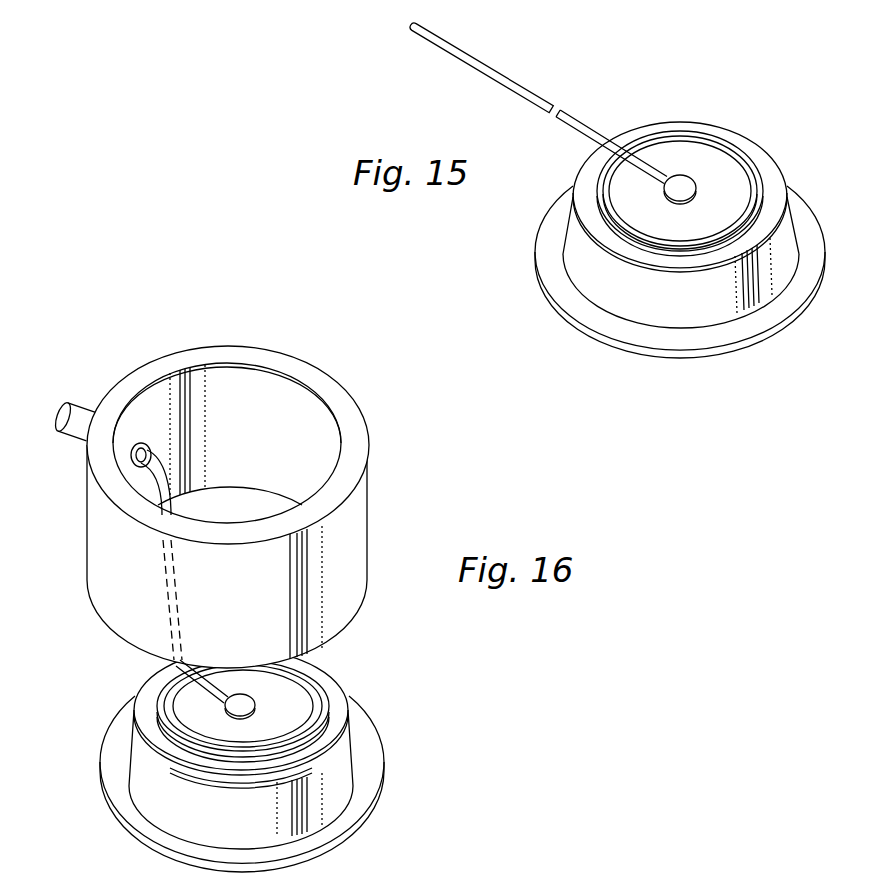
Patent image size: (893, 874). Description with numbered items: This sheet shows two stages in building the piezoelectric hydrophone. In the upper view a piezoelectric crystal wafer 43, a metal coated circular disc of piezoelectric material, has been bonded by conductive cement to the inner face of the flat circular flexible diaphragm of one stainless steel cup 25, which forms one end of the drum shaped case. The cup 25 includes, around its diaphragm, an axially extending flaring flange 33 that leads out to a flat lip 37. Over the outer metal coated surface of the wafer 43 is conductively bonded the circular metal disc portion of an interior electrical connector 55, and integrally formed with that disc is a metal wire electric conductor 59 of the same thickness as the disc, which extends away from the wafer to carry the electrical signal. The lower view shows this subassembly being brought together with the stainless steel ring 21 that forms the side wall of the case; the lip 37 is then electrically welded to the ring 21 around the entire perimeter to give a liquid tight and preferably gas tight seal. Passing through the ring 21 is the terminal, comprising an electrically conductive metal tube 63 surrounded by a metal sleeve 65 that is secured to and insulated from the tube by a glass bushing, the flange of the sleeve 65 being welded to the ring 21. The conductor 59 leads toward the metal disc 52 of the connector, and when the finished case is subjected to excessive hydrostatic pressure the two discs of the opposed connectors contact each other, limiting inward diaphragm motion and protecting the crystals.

In FIG. 16, the stainless steel ring 21 is at (364, 418).
In FIG. 15, the stainless steel cup 25 is at (652, 239).
In FIG. 16, the stainless steel cup 25 is at (270, 761).
In FIG. 15, the flaring flange 33 is at (617, 297).
In FIG. 15, the flat lip 37 is at (717, 338).
In FIG. 16, the flat lip 37 is at (369, 805).
In FIG. 15, the piezoelectric crystal wafer 43 is at (740, 149).
In FIG. 16, the piezoelectric crystal wafer 43 is at (319, 679).
In FIG. 16, the metal disc 52 is at (256, 705).
In FIG. 15, the interior electrical connector 55 is at (700, 188).
In FIG. 15, the metal wire electric conductor 59 is at (541, 93).
In FIG. 16, the metal wire electric conductor 59 is at (178, 507).
In FIG. 16, the electrically conductive metal tube 63 is at (86, 399).
In FIG. 16, the metal sleeve 65 is at (141, 441).